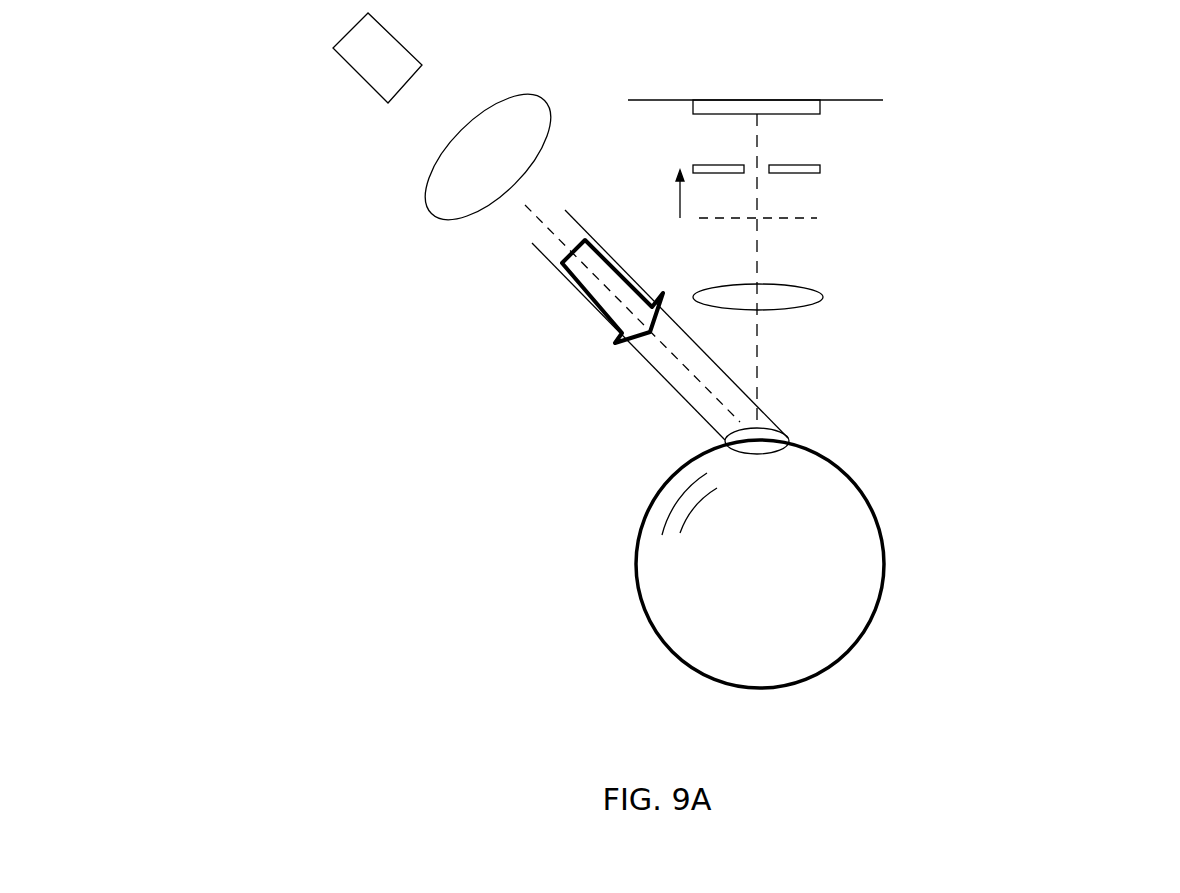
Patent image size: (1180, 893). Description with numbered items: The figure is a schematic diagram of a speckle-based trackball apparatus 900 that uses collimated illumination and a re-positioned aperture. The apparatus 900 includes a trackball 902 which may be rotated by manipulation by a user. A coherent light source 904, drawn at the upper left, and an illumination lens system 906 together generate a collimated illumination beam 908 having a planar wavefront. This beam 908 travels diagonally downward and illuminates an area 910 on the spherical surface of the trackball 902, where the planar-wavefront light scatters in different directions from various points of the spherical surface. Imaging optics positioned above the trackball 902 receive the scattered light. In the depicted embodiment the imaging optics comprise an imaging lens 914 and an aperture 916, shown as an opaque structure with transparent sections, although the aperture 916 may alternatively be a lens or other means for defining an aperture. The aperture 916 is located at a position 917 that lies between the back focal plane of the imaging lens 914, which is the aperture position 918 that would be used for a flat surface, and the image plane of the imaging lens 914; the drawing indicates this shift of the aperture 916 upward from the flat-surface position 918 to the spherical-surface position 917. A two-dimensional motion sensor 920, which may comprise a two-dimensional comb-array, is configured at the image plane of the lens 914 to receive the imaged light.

The speckle-based trackball apparatus 900 is at (810, 813).
The trackball 902 is at (760, 564).
The coherent light source 904 is at (295, 85).
The illumination lens system 906 is at (395, 195).
The collimated illumination beam 908 is at (628, 322).
The illuminated area 910 is at (757, 463).
The imaging lens 914 is at (763, 271).
The aperture 916 is at (717, 185).
The aperture position for spherical surface 917 is at (837, 158).
The aperture position for flat surface 918 is at (832, 223).
The two-dimensional motion sensor 920 is at (755, 75).